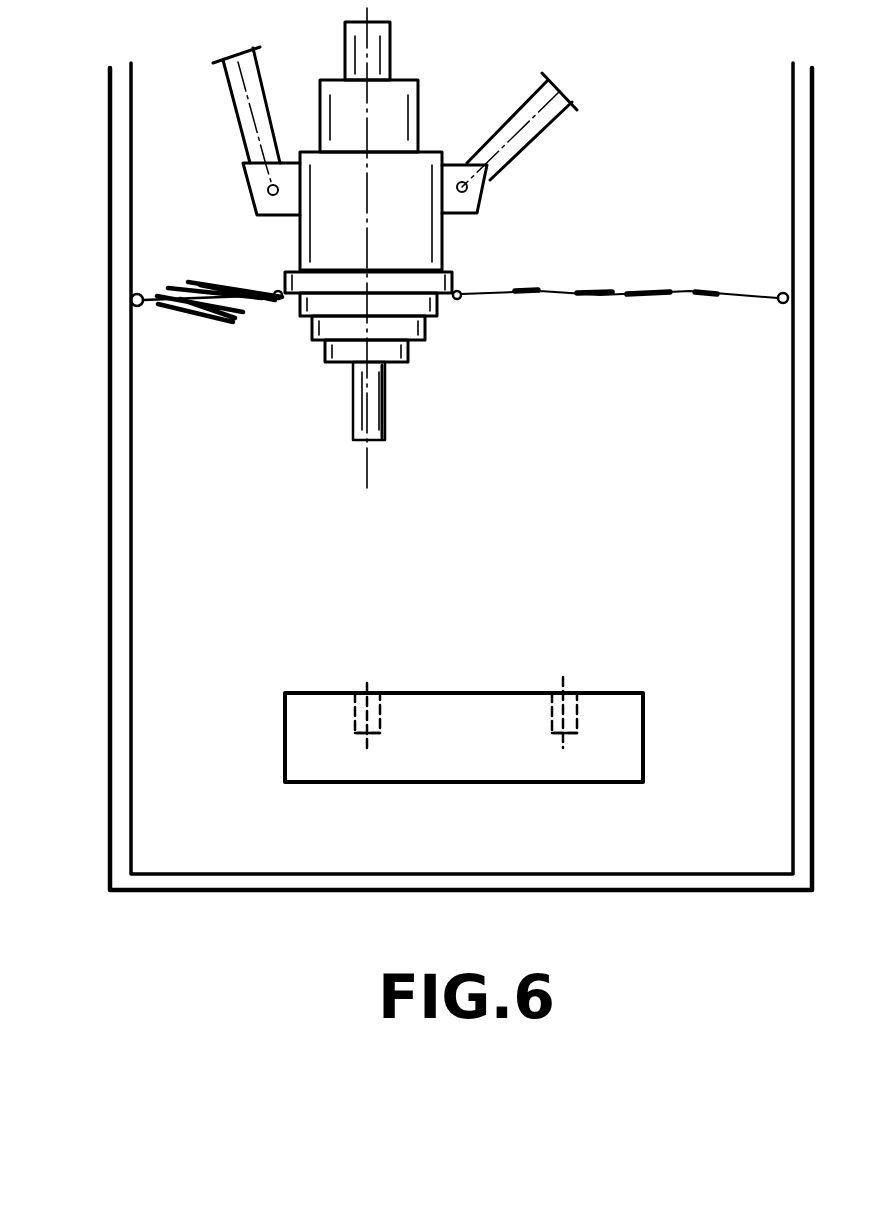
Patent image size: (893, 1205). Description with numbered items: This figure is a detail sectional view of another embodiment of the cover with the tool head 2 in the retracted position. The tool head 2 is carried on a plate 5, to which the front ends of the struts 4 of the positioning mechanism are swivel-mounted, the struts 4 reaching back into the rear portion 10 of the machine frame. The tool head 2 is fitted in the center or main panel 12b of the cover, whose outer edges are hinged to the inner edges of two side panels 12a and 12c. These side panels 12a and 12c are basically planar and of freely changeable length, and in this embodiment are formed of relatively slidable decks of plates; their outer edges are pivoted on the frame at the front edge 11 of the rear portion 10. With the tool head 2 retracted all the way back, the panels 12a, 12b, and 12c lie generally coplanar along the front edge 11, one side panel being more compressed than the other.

The rear portion 10 is at (117, 128).
The front edge 11 is at (137, 291).
The side panel 12a is at (207, 308).
The main panel 12b is at (433, 315).
The side panel 12c is at (640, 290).
The tool head 2 is at (332, 360).
The struts 4 is at (518, 110).
The plate 5 is at (418, 235).